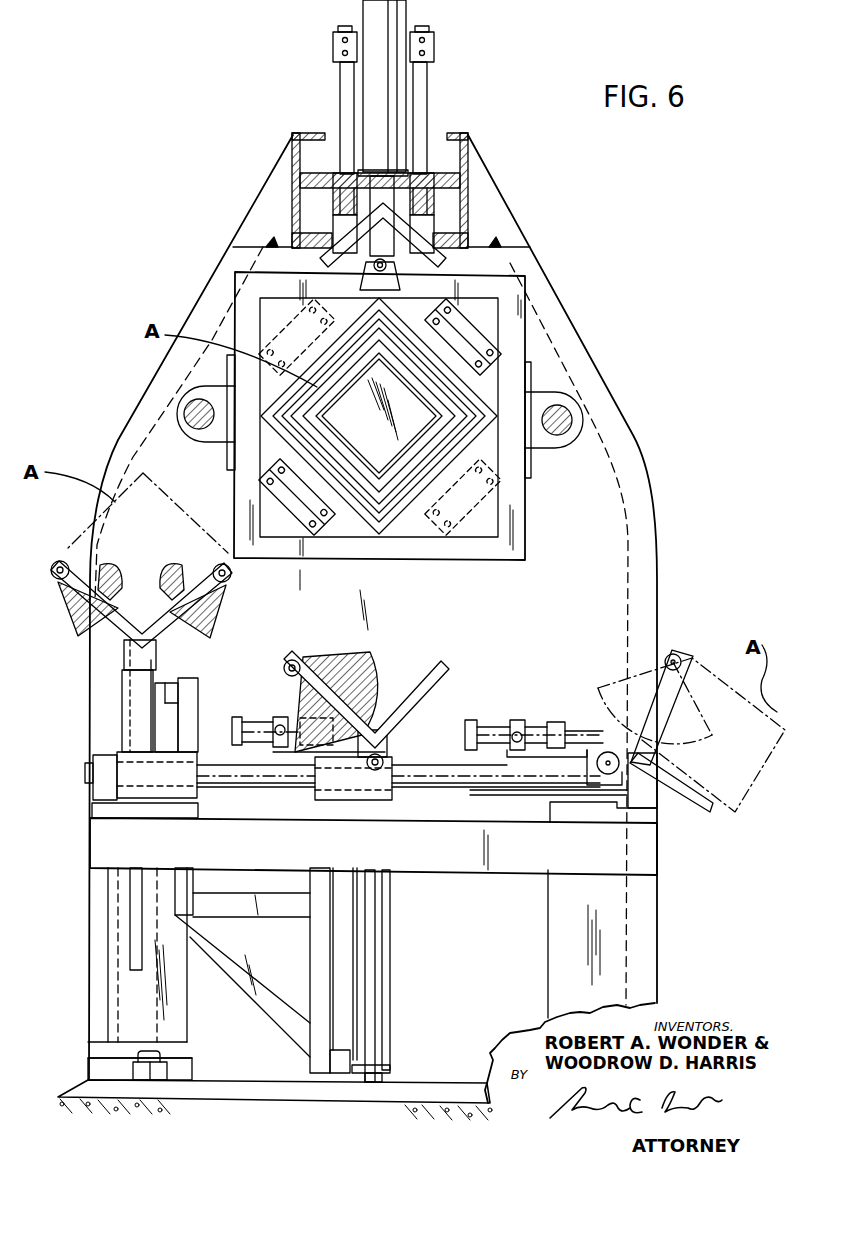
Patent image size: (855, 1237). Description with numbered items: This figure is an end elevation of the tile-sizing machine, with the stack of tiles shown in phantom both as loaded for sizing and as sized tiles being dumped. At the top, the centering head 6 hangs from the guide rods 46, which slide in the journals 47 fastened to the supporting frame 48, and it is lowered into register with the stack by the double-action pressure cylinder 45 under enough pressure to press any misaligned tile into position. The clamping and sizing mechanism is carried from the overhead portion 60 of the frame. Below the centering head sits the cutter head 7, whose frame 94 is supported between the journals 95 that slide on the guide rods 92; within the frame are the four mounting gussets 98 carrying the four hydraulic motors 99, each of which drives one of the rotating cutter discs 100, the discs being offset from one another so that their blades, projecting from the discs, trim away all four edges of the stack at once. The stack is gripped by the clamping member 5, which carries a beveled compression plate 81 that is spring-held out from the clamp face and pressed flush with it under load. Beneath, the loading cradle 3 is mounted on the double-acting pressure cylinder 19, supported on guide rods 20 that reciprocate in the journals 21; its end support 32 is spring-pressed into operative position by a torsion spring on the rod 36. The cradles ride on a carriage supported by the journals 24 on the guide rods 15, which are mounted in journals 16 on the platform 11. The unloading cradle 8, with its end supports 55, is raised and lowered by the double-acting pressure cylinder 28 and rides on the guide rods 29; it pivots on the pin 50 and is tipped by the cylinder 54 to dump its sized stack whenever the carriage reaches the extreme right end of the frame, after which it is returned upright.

The loading cradle 3 is at (114, 627).
The clamping member 5 is at (343, 430).
The centering head 6 is at (426, 240).
The cutter head 7 is at (538, 342).
The unloading cradle 8 is at (312, 697).
The platform 11 is at (610, 856).
The guide rods 15 is at (257, 785).
The journals 16 is at (648, 802).
The double-acting pressure cylinder 19 is at (122, 726).
The guide rods 20 is at (132, 925).
The journals 21 is at (136, 742).
The journals 24 is at (182, 800).
The double-acting pressure cylinder 28 is at (392, 910).
The guide rods 29 is at (378, 945).
The end support 32 is at (114, 565).
The rod 36 is at (60, 566).
The double-action pressure cylinder 45 is at (398, 110).
The guide rods 46 is at (343, 80).
The journals 47 is at (330, 198).
The supporting frame 48 is at (460, 172).
The pin 50 is at (390, 768).
The cylinder 54 is at (250, 717).
The end supports 55 is at (332, 656).
The overhead portion of the frame 60 is at (293, 152).
The compression plate 81 is at (427, 447).
The guide rods 92 is at (190, 412).
The frame 94 is at (517, 307).
The journals 95 is at (185, 393).
The mounting gussets 98 is at (488, 386).
The hydraulic motors 99 is at (277, 313).
The rotating cutter discs 100 is at (473, 410).